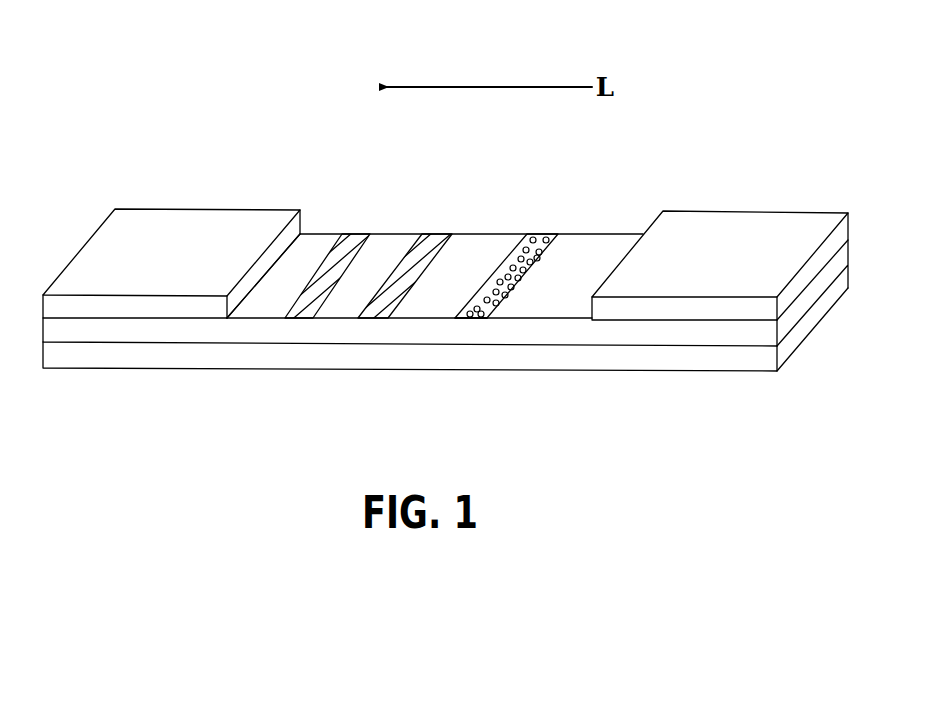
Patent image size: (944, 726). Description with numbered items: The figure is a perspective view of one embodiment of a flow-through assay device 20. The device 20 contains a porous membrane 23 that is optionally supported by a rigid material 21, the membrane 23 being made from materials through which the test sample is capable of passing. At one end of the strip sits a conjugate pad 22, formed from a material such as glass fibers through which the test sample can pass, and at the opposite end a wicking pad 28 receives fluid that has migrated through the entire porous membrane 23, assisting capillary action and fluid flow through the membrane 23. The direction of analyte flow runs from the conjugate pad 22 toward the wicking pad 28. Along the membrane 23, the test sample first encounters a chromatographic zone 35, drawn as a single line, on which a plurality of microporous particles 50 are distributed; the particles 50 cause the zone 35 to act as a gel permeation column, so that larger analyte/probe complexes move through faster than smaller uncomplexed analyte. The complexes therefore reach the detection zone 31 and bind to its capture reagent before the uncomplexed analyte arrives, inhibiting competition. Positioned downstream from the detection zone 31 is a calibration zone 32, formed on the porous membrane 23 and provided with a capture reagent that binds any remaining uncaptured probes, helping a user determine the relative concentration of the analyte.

The flow-through assay device 20 is at (93, 150).
The rigid material 21 is at (168, 363).
The conjugate pad 22 is at (767, 222).
The porous membrane 23 is at (572, 337).
The wicking pad 28 is at (163, 226).
The detection zone 31 is at (437, 242).
The calibration zone 32 is at (346, 238).
The chromatographic zone 35 is at (530, 237).
The microporous particles 50 is at (485, 318).